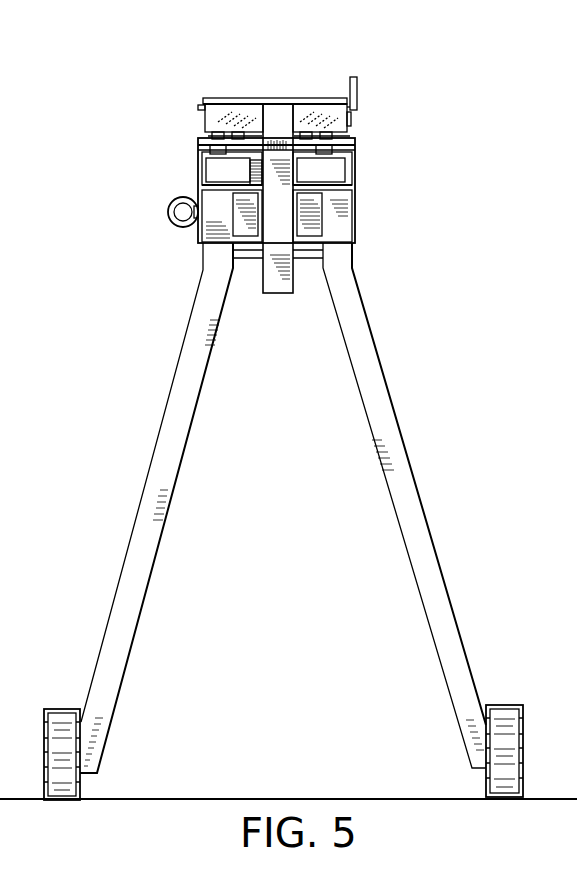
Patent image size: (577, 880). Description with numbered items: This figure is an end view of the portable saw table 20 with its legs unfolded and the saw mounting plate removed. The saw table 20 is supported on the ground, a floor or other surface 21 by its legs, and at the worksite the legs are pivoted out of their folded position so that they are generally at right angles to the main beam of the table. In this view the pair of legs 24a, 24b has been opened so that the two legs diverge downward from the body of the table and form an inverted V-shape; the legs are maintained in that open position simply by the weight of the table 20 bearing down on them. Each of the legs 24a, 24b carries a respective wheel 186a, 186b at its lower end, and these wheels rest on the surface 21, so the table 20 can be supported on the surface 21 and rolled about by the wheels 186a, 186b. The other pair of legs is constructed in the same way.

The saw table 20 is at (162, 62).
The leg 24a is at (174, 385).
The leg 24b is at (385, 385).
The wheel 186a is at (62, 708).
The wheel 186b is at (500, 705).
The surface 21 is at (258, 797).